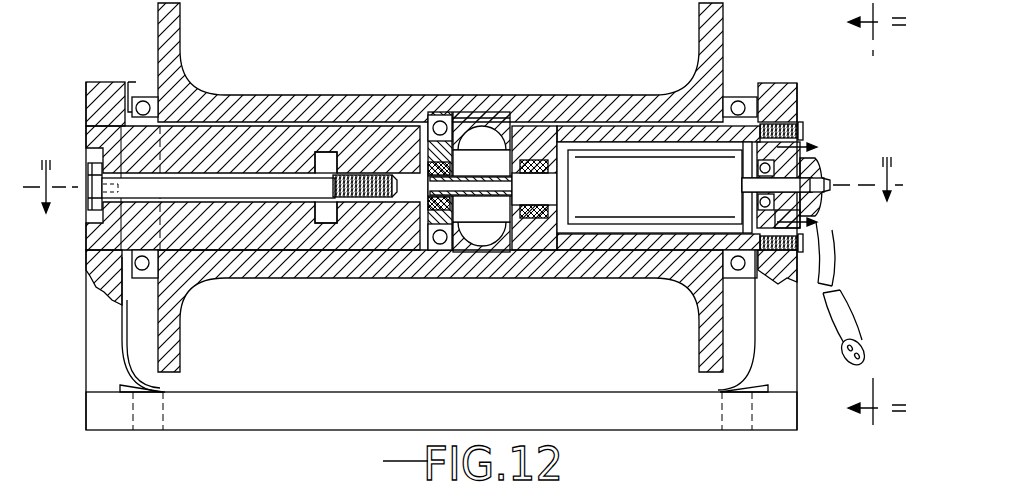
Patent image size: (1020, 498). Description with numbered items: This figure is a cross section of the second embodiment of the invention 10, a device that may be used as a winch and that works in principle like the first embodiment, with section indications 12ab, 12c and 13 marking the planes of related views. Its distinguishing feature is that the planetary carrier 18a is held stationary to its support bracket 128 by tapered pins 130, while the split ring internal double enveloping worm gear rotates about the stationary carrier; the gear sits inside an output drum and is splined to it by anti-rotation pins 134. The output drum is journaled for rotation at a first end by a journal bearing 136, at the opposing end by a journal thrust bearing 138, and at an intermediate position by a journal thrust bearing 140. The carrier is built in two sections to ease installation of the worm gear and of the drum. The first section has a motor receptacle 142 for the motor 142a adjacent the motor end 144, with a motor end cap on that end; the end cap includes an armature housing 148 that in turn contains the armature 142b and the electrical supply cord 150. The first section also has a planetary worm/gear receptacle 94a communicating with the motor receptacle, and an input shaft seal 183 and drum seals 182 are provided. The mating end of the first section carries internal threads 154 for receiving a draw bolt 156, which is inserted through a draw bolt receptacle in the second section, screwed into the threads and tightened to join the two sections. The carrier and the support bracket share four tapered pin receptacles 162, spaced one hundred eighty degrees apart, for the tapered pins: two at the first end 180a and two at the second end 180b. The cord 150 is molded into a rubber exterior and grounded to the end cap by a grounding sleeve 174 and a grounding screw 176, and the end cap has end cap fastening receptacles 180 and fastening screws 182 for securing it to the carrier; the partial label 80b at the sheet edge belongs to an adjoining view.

The spindle assembly 10 is at (629, 92).
The section line 12ab is at (467, 200).
The section line 12c is at (820, 187).
The section line 13 is at (859, 214).
The planetary carrier 18a is at (330, 93).
The planetary worm/gear receptacle 94a is at (476, 160).
The support bracket 128 is at (548, 392).
The tapered pins 130 is at (88, 180).
The anti-rotation pins 134 is at (474, 150).
The journal bearing 136 is at (742, 97).
The journal thrust bearing 138 is at (133, 97).
The journal thrust bearing 140 is at (437, 112).
The motor receptacle 142 is at (755, 497).
The motor 142a is at (665, 148).
The armature 142b is at (748, 184).
The motor end 144 is at (875, 497).
The armature housing 148 is at (822, 205).
The electrical supply cord 150 is at (858, 338).
The internal threads 154 is at (385, 178).
The draw bolt 156 is at (256, 185).
The tapered pin receptacles 162 is at (50, 497).
The grounding sleeve 174 is at (822, 178).
The grounding screw 176 is at (823, 165).
The end cap fastening receptacles 180 is at (760, 160).
The first end 180a is at (815, 235).
The second end 180b is at (86, 140).
The fastening screws 182 is at (192, 92).
The input shaft seal 183 is at (520, 158).
The part 80b is at (25, 486).